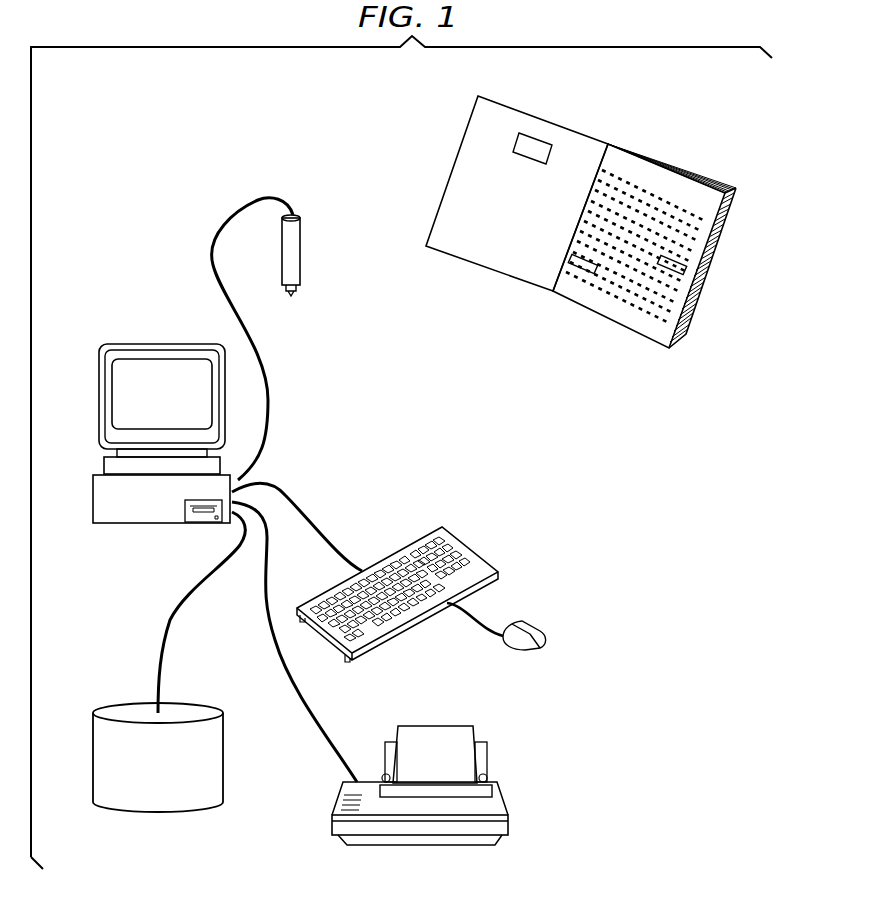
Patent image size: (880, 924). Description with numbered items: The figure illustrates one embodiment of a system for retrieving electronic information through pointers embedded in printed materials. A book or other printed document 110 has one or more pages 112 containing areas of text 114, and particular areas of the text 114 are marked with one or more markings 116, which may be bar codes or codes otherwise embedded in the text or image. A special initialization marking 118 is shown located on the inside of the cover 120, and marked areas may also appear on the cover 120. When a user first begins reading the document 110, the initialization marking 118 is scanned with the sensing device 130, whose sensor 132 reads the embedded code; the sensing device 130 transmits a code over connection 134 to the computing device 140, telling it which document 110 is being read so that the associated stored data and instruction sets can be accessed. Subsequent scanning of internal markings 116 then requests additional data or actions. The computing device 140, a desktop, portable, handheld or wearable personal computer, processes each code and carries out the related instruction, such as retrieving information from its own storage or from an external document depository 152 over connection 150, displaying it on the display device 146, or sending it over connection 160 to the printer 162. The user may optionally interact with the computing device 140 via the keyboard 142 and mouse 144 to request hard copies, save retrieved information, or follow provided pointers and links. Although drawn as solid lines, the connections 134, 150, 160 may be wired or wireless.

The printed material or document 110 is at (594, 219).
The pages 112 is at (687, 323).
The areas of text 114 is at (685, 212).
The marking 116 is at (636, 300).
The initialization marking 118 is at (534, 133).
The cover 120 is at (480, 268).
The sensing device 130 is at (320, 279).
The sensor 132 is at (291, 296).
The connection 134 is at (268, 412).
The computing device 140 is at (125, 525).
The keyboard 142 is at (427, 533).
The mouse 144 is at (543, 627).
The display device 146 is at (153, 343).
The connection 150 is at (163, 642).
The external document depository 152 is at (93, 768).
The connection 160 is at (323, 737).
The printer 162 is at (420, 847).